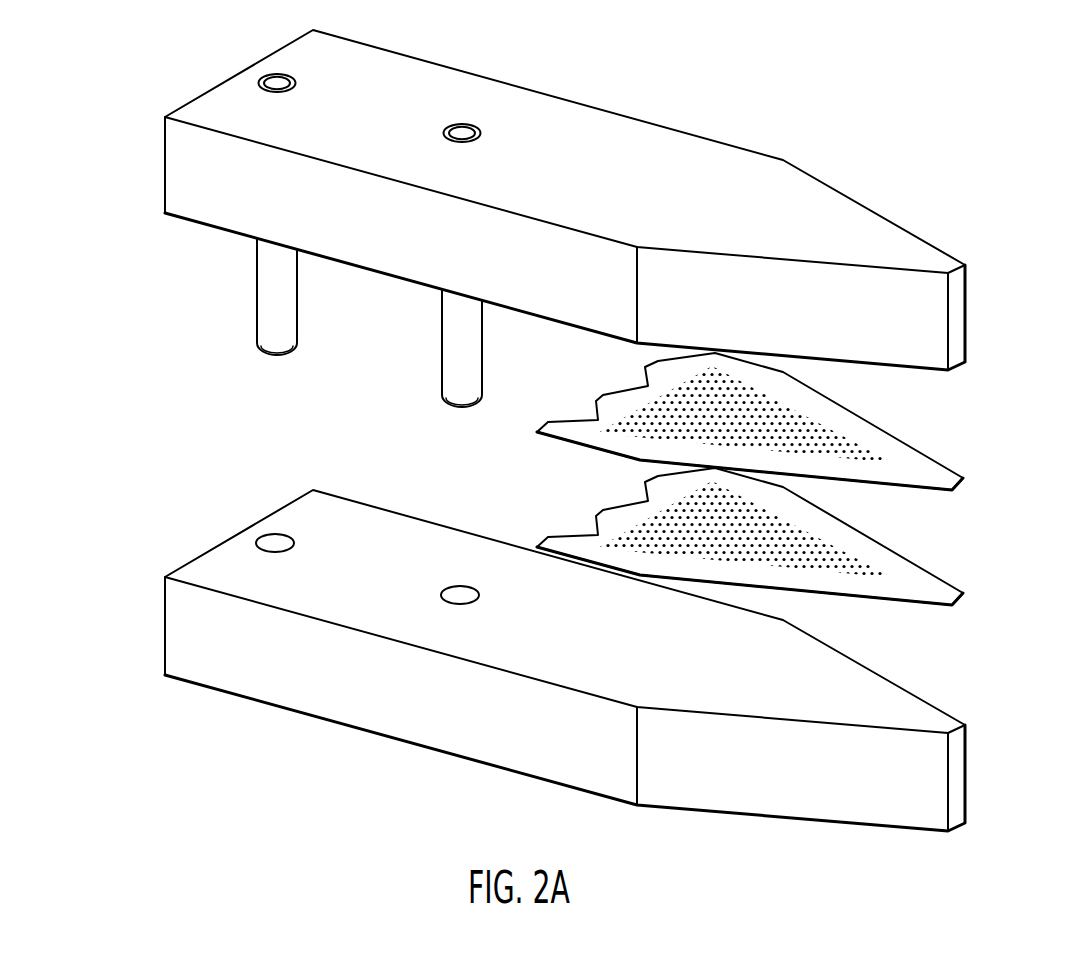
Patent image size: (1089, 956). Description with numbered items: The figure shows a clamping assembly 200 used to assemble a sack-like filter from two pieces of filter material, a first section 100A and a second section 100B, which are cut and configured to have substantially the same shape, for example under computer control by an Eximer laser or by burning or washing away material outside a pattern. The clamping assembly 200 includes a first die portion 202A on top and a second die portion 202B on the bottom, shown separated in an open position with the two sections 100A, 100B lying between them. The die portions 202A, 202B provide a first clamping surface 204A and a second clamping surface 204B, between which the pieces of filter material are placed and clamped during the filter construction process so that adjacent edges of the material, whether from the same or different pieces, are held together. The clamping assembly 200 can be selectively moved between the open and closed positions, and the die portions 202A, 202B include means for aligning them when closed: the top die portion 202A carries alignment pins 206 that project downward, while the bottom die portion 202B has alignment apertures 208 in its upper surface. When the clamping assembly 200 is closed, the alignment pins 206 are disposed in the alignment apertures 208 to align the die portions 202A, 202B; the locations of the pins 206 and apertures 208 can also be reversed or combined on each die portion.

The clamping assembly 200 is at (608, 430).
The first die portion 202A is at (619, 206).
The second die portion 202B is at (603, 660).
The first clamping surface 204A is at (913, 371).
The second clamping surface 204B is at (928, 717).
The alignment pins 206 is at (457, 350).
The alignment apertures 208 is at (458, 597).
The first section 100A is at (950, 450).
The second section 100B is at (950, 573).